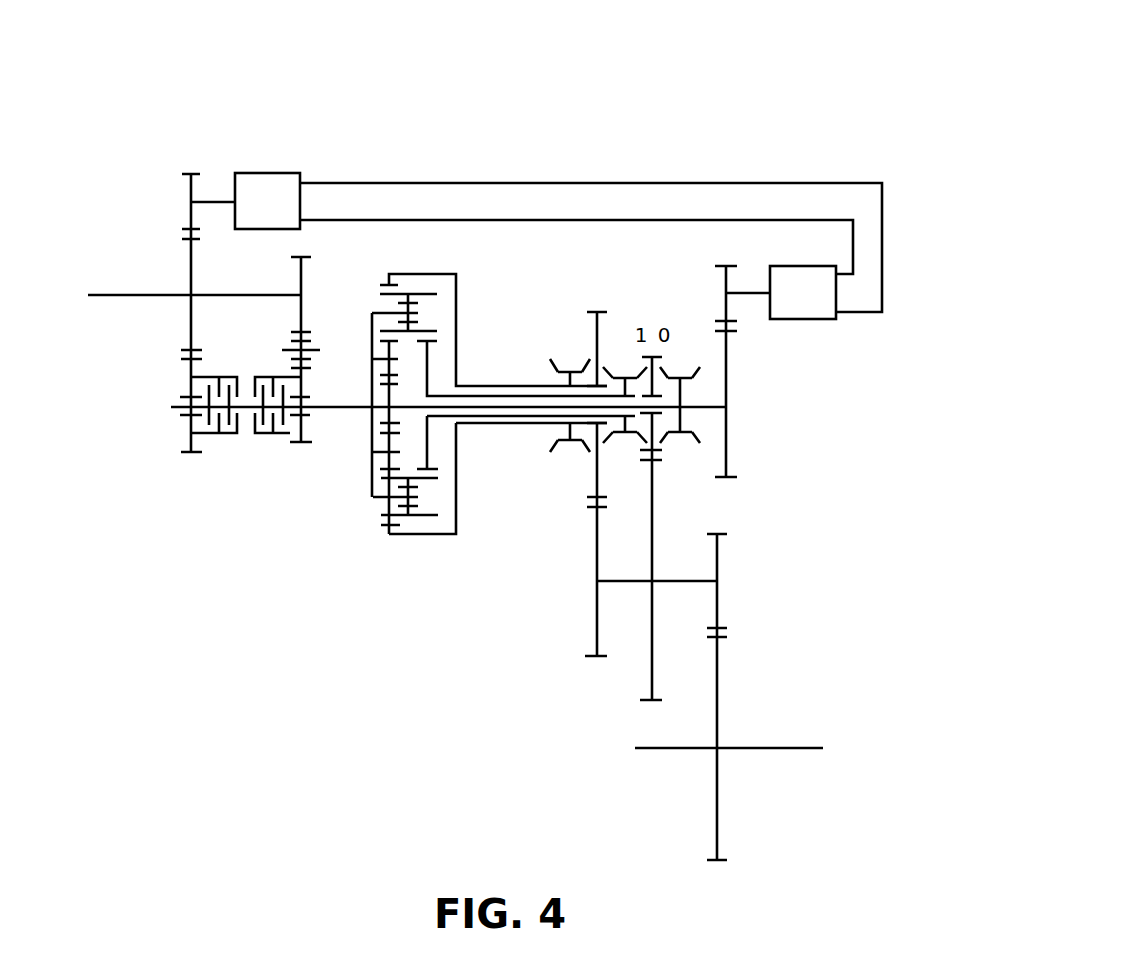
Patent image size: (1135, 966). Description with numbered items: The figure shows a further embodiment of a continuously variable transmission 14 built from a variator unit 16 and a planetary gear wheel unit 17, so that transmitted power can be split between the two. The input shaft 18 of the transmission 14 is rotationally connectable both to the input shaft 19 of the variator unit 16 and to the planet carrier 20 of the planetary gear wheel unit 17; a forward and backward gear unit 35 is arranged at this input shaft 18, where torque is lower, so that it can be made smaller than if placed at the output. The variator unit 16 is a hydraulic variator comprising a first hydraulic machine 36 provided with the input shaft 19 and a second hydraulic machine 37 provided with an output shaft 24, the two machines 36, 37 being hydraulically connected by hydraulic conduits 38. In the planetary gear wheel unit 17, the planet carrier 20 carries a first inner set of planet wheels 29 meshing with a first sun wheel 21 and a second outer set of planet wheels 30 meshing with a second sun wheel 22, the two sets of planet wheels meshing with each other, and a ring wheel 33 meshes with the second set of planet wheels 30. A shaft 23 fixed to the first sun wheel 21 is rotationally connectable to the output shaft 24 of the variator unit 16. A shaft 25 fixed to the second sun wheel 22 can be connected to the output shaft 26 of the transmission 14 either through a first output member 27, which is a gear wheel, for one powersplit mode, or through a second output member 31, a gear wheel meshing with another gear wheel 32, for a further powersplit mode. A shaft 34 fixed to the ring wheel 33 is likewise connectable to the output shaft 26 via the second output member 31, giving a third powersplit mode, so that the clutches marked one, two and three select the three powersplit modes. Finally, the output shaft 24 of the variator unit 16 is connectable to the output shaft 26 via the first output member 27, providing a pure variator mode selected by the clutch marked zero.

The transmission 14 is at (760, 63).
The variator unit 16 is at (364, 160).
The planetary gear wheel unit 17 is at (332, 573).
The input shaft 18 is at (125, 295).
The input shaft 19 is at (221, 200).
The planet carrier 20 is at (373, 440).
The first sun wheel 21 is at (380, 410).
The second sun wheel 22 is at (457, 500).
The shaft 23 is at (512, 396).
The output shaft 24 is at (748, 293).
The shaft 25 is at (537, 416).
The output shaft 26 is at (779, 749).
The first output member 27 is at (653, 418).
The first inner set of planet wheels 29 is at (384, 465).
The second outer set of planet wheels 30 is at (423, 518).
The second output member 31 is at (595, 473).
The gear wheel 32 is at (595, 635).
The ring wheel 33 is at (407, 534).
The shaft 34 is at (487, 423).
The gear unit 35 is at (155, 433).
The first hydraulic machine 36 is at (268, 185).
The second hydraulic machine 37 is at (815, 305).
The hydraulic conduits 38 is at (510, 182).